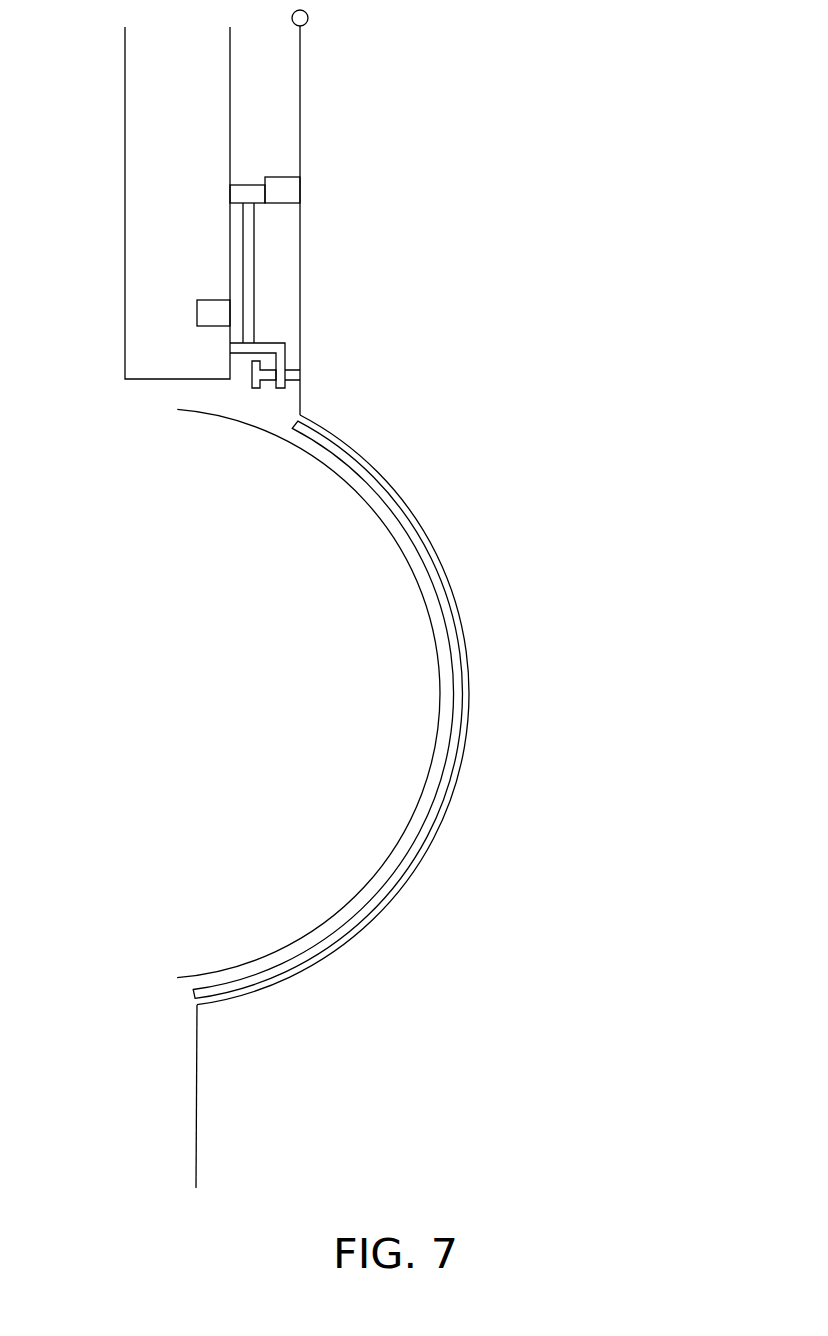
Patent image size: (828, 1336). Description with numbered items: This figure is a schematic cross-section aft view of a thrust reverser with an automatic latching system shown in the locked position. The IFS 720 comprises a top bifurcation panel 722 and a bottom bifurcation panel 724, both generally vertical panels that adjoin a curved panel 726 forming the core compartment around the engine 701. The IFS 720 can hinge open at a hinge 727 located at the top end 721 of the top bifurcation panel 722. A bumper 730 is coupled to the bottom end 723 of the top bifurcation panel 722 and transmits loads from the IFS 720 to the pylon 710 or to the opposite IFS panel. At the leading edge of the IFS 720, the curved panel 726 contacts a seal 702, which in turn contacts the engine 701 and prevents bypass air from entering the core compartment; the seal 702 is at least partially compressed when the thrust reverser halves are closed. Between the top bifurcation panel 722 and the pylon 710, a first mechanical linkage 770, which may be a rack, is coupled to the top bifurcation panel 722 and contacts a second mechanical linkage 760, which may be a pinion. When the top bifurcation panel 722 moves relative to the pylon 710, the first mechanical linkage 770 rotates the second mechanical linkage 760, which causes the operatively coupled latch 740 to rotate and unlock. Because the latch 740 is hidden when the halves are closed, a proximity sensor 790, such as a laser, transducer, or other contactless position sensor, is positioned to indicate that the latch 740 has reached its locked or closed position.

The engine 701 is at (325, 928).
The seal 702 is at (462, 745).
The pylon 710 is at (133, 381).
The IFS 720 is at (592, 356).
The top end 721 is at (334, 48).
The top bifurcation panel 722 is at (300, 131).
The bottom end 723 is at (336, 358).
The bottom bifurcation panel 724 is at (196, 1047).
The curved panel 726 is at (433, 837).
The hinge 727 is at (309, 17).
The bumper 730 is at (262, 388).
The latch 740 is at (286, 352).
The second mechanical linkage 760 is at (230, 190).
The first mechanical linkage 770 is at (300, 192).
The proximity sensor 790 is at (197, 312).